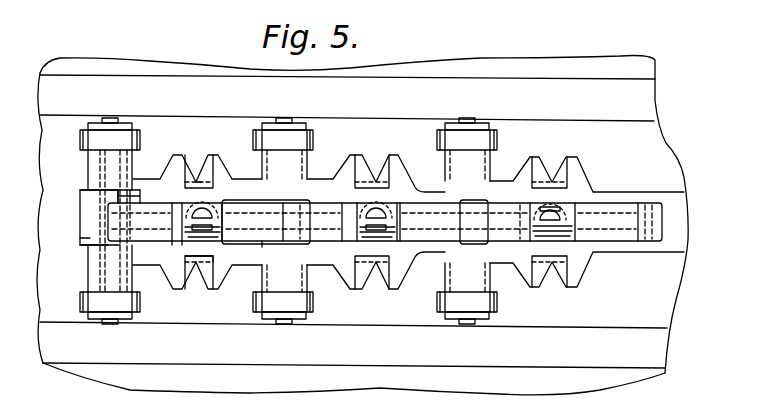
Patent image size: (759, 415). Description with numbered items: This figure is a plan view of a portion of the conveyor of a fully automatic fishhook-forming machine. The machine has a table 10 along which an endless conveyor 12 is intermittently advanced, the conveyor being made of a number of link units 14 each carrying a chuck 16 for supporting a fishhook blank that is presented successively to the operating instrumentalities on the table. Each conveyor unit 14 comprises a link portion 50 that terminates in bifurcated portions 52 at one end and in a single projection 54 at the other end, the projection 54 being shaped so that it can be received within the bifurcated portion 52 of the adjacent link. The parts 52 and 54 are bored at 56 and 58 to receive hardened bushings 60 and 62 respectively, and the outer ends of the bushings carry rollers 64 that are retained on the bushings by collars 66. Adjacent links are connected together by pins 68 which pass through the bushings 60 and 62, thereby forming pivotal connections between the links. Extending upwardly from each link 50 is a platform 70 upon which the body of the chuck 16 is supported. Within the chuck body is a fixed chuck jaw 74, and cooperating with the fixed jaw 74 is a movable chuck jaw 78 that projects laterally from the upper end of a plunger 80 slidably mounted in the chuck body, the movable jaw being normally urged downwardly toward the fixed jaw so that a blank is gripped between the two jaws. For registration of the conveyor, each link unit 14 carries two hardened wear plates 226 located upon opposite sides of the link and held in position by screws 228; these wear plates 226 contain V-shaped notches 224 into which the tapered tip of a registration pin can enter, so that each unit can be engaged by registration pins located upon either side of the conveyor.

The table 10 is at (626, 378).
The endless conveyor 12 is at (652, 272).
The link unit 14 is at (480, 263).
The chuck 16 is at (362, 210).
The link portion 50 is at (324, 227).
The bifurcated portions 52 is at (80, 191).
The single projection 54 is at (263, 244).
The bore 56 is at (57, 199).
The bore 58 is at (88, 273).
The hardened bushing 60 is at (134, 157).
The hardened bushing 62 is at (132, 194).
The rollers 64 is at (86, 137).
The collars 66 is at (104, 320).
The pins 68 is at (113, 119).
The platform 70 is at (152, 229).
The fixed chuck jaw 74 is at (213, 268).
The movable chuck jaw 78 is at (216, 210).
The plunger 80 is at (200, 212).
The V-shaped notches 224 is at (171, 187).
The hardened wear plates 226 is at (181, 268).
The screws 228 is at (202, 289).